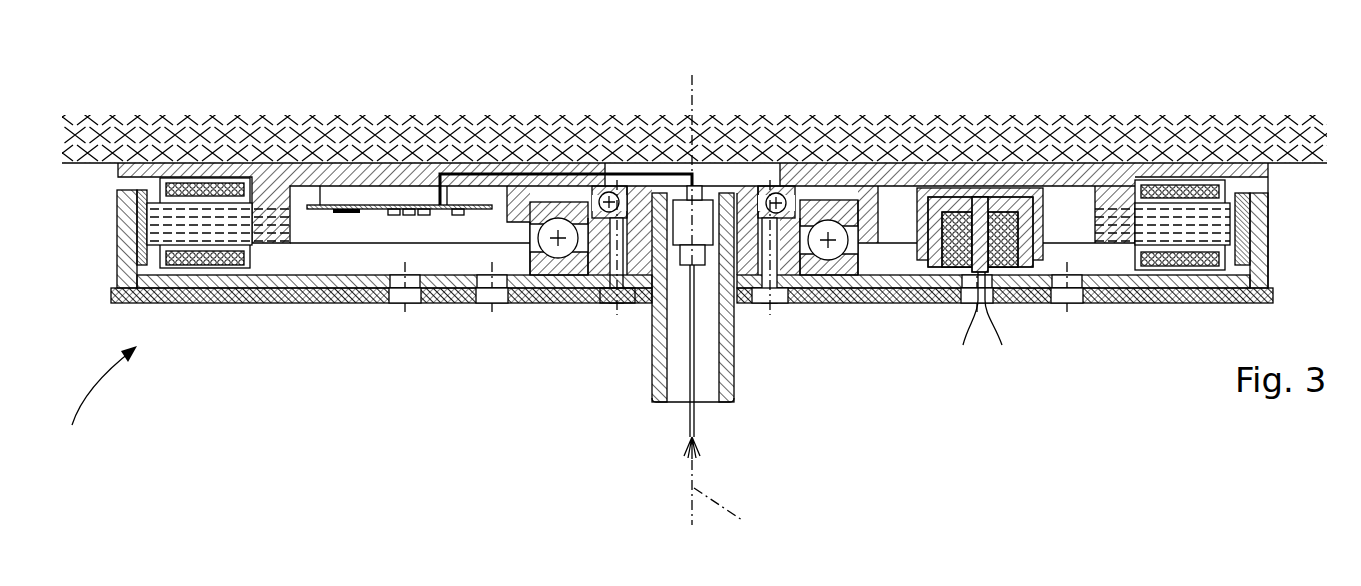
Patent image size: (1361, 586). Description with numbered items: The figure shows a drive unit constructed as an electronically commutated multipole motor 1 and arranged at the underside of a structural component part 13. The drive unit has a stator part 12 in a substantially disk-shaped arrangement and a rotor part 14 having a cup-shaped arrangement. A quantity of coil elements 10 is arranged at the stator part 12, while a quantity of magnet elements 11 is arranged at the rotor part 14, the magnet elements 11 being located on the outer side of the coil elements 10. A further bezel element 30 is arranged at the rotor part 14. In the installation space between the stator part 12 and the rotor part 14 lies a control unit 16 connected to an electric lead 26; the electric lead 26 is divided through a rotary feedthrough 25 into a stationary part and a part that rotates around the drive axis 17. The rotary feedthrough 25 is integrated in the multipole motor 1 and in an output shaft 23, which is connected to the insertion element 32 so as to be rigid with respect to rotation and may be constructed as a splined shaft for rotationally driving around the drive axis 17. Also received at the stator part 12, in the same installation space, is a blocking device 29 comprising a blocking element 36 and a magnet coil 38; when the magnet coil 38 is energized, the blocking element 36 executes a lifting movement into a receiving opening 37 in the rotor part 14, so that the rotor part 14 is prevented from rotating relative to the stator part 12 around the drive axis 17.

The multipole motor 1 is at (97, 408).
The coil elements 10 is at (201, 182).
The magnet elements 11 is at (141, 190).
The stator part 12 is at (283, 174).
The structural component part 13 is at (466, 126).
The rotor part 14 is at (240, 283).
The control unit 16 is at (376, 205).
The drive axis 17 is at (740, 509).
The output shaft 23 is at (736, 368).
The rotary feedthrough 25 is at (702, 205).
The electric lead 26 is at (535, 172).
The blocking device 29 is at (1021, 192).
The bezel element 30 is at (1273, 297).
The insertion element 32 is at (753, 203).
The blocking element 36 is at (1013, 330).
The receiving opening 37 is at (948, 334).
The magnet coil 38 is at (955, 212).